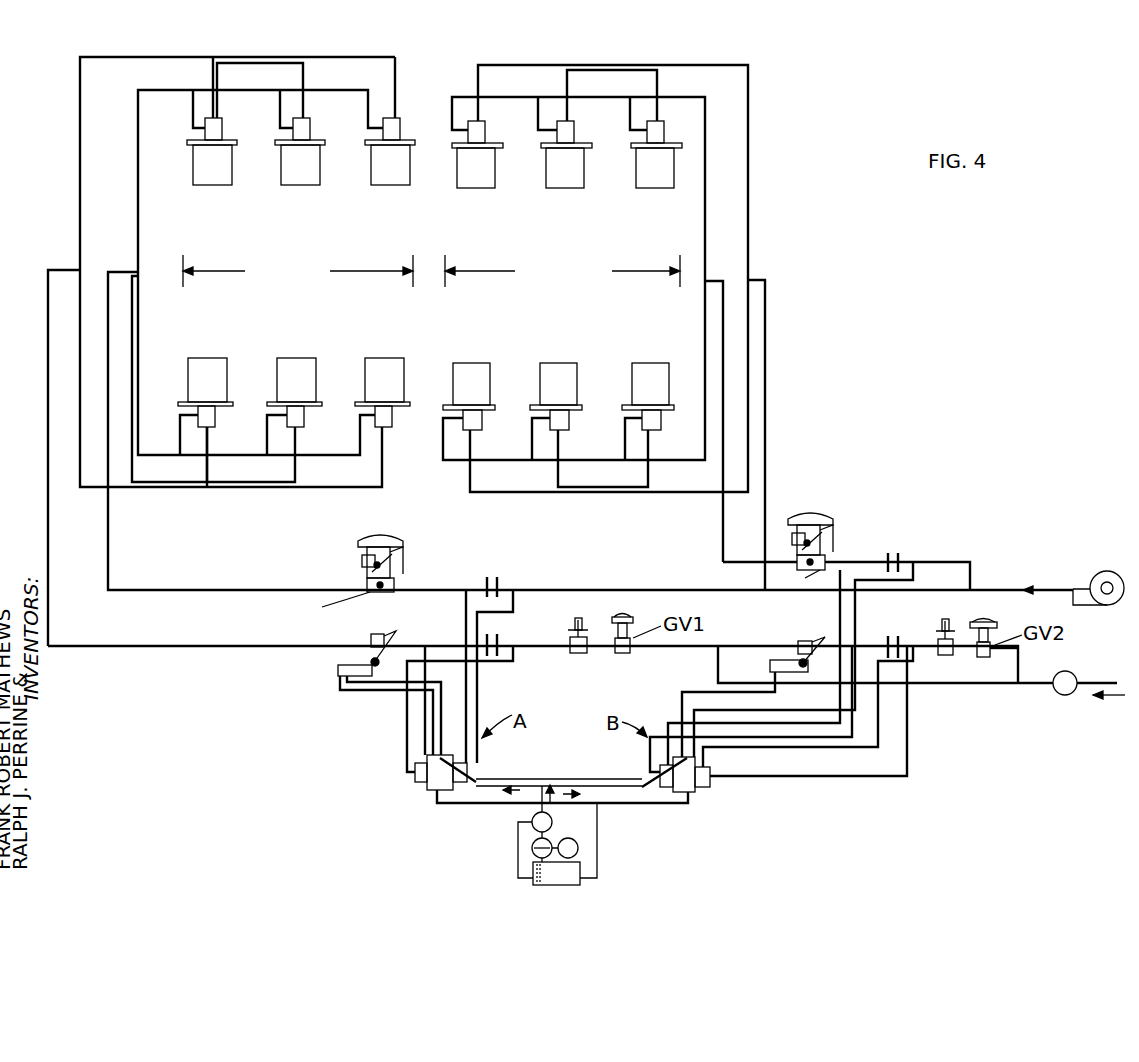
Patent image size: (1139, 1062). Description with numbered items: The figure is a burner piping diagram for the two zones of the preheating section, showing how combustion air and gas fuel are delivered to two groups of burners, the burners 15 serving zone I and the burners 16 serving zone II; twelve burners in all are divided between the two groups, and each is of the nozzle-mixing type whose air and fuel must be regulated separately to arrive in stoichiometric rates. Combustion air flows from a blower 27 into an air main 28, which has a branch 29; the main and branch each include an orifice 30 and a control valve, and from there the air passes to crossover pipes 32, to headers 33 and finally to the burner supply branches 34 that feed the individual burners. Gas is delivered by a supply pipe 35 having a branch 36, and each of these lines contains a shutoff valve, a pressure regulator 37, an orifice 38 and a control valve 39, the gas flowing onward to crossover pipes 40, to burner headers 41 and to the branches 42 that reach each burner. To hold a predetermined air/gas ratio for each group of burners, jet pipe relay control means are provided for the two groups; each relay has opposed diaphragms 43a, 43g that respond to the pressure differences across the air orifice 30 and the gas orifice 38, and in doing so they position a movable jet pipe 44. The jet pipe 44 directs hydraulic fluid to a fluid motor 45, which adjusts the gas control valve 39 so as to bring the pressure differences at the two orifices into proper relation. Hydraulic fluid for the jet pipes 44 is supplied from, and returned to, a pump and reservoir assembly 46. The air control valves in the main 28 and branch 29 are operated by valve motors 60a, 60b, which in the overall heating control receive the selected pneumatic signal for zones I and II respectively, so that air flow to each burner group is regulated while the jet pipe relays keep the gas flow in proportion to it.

The burner 15 is at (323, 330).
The burner 16 is at (595, 338).
The blower 27 is at (1110, 571).
The air main 28 is at (575, 588).
The branch 29 is at (952, 560).
The orifice 30 is at (492, 577).
The crossover pipe 32 is at (137, 208).
The header 33 is at (162, 92).
The burner supply branch 34 is at (280, 118).
The supply pipe 35 is at (1100, 680).
The branch 36 is at (1023, 658).
The pressure regulator 37 is at (580, 654).
The orifice 38 is at (498, 636).
The control valve 39 is at (385, 633).
The crossover pipe 40 is at (79, 320).
The burner header 41 is at (395, 58).
The branch 42 is at (305, 79).
The diaphragm 43a is at (473, 776).
The diaphragm 43g is at (415, 776).
The movable jet pipe 44 is at (435, 790).
The fluid motor 45 is at (338, 670).
The pump and reservoir assembly 46 is at (577, 833).
The valve motor 60a is at (380, 535).
The valve motor 60b is at (820, 512).